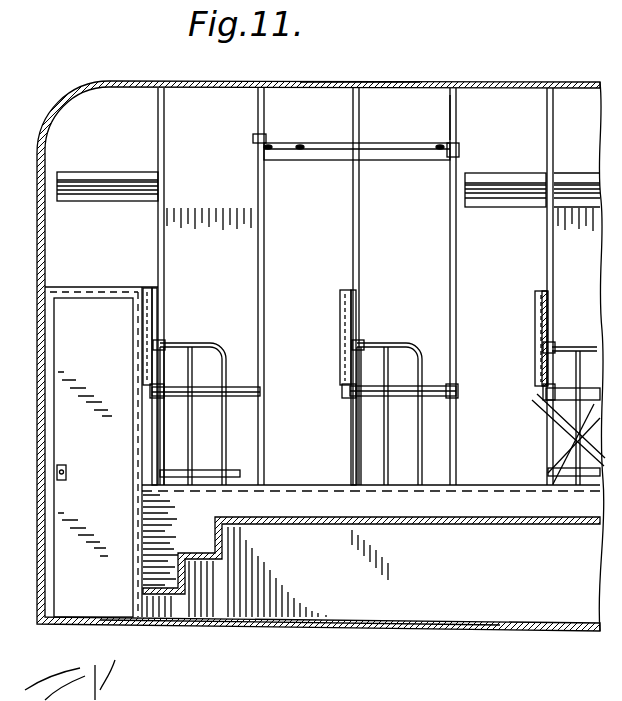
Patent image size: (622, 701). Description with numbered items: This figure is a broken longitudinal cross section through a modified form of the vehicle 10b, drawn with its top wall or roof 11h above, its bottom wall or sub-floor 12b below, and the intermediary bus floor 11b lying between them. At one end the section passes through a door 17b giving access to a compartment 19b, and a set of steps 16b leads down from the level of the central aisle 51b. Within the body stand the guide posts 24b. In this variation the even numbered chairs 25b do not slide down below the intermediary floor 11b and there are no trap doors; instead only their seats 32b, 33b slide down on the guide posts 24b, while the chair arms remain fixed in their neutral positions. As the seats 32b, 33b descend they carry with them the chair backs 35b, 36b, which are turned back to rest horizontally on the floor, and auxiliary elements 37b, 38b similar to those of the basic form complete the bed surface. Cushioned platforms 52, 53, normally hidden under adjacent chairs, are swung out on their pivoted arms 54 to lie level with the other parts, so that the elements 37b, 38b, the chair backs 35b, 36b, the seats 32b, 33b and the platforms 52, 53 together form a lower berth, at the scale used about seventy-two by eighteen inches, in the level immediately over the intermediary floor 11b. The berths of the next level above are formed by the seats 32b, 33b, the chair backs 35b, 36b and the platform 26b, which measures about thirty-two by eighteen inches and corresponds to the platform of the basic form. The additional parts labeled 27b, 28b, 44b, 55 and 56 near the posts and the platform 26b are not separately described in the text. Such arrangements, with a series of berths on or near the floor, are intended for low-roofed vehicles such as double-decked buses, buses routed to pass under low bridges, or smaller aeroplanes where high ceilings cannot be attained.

The car body shell 10b is at (558, 82).
The roof wall 11h is at (424, 80).
The floor wall 12b is at (466, 631).
The guide posts 24b is at (164, 126).
The post 28b is at (447, 145).
The upper rail brackets 27b is at (92, 172).
The platform 26b is at (340, 162).
The bar brackets 55 is at (253, 140).
The clips 44b is at (440, 146).
The door 17b is at (70, 318).
The door frame 19b is at (126, 283).
The intermediary bus floor 11b is at (310, 485).
The auxiliary element 38b is at (238, 486).
The raised floor slab 51b is at (510, 528).
The steps 16b is at (190, 553).
The chair back 35b is at (156, 310).
The chair back 36b is at (340, 322).
The brackets 56 is at (350, 396).
The chairs 25b is at (378, 408).
The chair seat 32b is at (237, 388).
The chair seat 33b is at (236, 397).
The auxiliary element 37b is at (240, 473).
The cushioned platform 52 is at (556, 422).
The cushioned platform 53 is at (562, 438).
The pivoted arms 54 is at (565, 456).